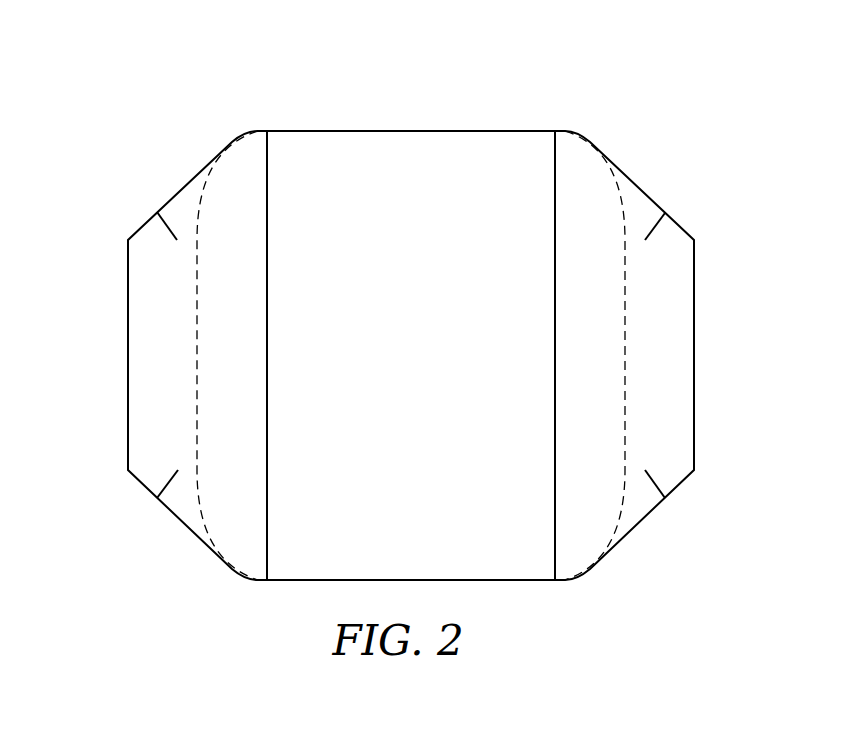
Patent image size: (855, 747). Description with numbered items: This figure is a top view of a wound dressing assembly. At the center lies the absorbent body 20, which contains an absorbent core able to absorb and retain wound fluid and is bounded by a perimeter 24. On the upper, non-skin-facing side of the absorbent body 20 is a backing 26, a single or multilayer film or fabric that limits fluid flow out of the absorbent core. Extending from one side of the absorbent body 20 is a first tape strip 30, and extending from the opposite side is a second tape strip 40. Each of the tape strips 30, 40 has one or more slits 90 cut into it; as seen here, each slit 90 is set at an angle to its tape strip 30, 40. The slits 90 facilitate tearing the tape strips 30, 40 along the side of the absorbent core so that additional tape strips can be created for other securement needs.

The absorbent body 20 is at (328, 157).
The perimeter 24 is at (461, 131).
The backing 26 is at (507, 160).
The first tape strip 30 is at (137, 305).
The second tape strip 40 is at (685, 311).
The slit 90 is at (172, 490).